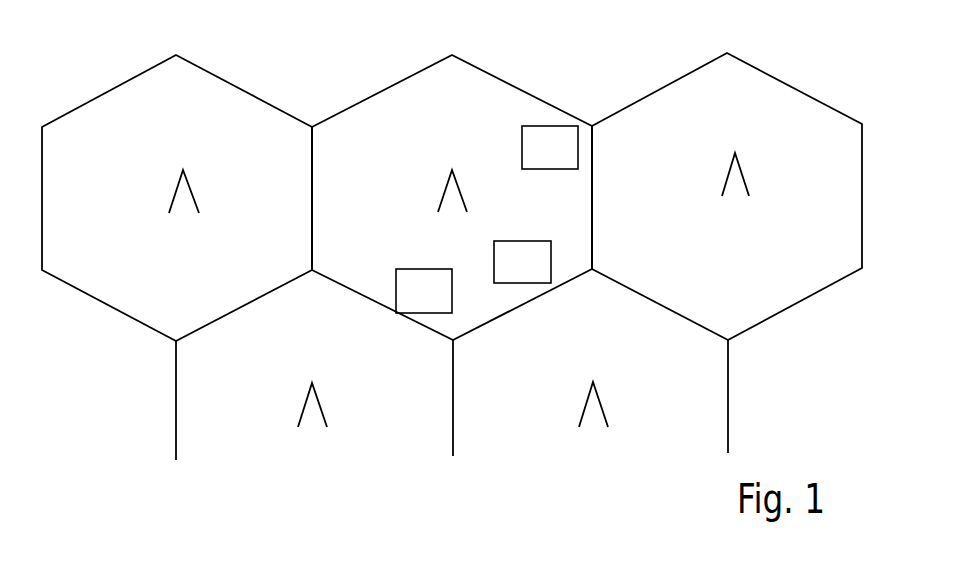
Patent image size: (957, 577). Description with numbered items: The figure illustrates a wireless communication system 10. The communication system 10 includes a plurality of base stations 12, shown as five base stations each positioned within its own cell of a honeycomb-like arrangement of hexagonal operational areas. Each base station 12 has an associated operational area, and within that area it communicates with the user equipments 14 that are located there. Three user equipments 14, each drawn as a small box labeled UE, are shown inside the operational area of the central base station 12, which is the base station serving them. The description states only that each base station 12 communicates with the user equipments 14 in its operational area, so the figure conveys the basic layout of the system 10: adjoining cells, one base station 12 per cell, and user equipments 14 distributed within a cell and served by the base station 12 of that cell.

The wireless communication system 10 is at (737, 37).
The base station 12 is at (452, 256).
The user equipment (UE) 14 is at (474, 219).